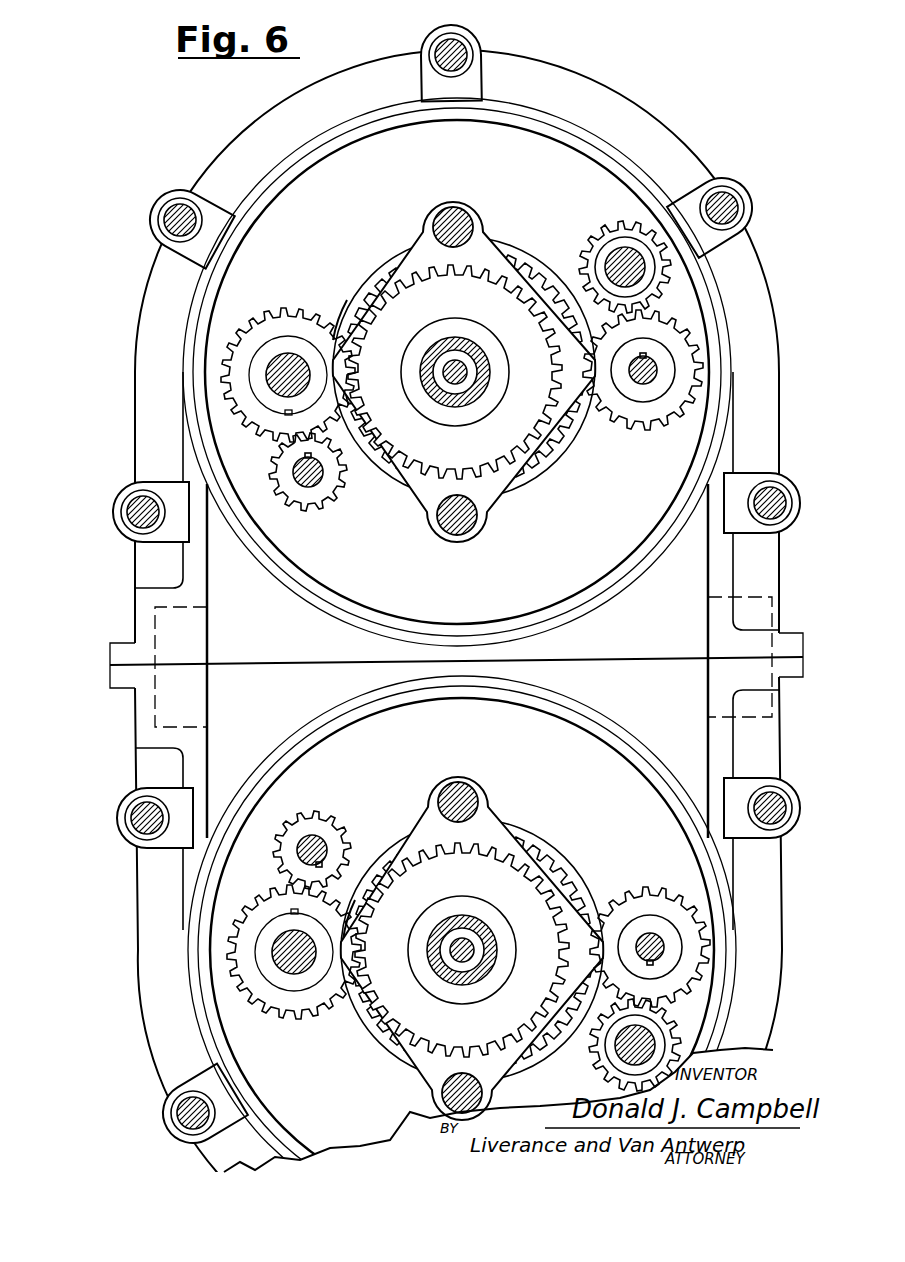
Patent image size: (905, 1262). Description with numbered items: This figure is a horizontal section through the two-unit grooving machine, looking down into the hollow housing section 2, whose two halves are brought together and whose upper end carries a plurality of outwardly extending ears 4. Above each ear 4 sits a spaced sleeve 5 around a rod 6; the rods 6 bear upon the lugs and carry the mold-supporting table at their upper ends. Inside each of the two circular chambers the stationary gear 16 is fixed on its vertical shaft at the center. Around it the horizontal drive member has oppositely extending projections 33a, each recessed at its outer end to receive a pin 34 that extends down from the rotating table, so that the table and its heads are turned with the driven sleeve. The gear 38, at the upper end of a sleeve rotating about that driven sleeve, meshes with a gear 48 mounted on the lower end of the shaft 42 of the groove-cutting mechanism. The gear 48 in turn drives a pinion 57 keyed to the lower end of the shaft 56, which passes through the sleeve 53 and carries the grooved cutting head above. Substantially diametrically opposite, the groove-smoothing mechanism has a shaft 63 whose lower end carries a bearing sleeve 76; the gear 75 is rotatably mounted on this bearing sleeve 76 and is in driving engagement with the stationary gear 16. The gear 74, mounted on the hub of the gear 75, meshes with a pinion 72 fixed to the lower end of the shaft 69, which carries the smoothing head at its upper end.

The section 2 is at (165, 892).
The ears 4 is at (483, 75).
The sleeves 5 is at (455, 78).
The rods 6 is at (437, 60).
The gear 16 is at (485, 292).
The projections 33a is at (490, 235).
The pin 34 is at (455, 213).
The gear 38 is at (355, 265).
The shaft 42 is at (647, 380).
The gear 48 is at (632, 405).
The sleeve 53 is at (628, 268).
The shaft 56 is at (612, 275).
The pinion 57 is at (645, 300).
The shaft 63 is at (292, 367).
The shaft 69 is at (312, 470).
The pinion 72 is at (308, 497).
The gear 74 is at (263, 425).
The gear 75 is at (340, 300).
The bearing sleeve 76 is at (272, 360).